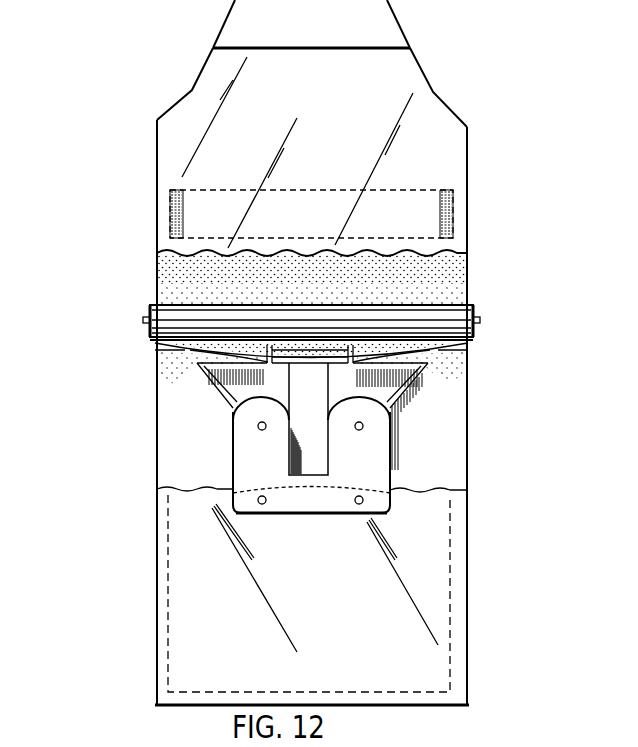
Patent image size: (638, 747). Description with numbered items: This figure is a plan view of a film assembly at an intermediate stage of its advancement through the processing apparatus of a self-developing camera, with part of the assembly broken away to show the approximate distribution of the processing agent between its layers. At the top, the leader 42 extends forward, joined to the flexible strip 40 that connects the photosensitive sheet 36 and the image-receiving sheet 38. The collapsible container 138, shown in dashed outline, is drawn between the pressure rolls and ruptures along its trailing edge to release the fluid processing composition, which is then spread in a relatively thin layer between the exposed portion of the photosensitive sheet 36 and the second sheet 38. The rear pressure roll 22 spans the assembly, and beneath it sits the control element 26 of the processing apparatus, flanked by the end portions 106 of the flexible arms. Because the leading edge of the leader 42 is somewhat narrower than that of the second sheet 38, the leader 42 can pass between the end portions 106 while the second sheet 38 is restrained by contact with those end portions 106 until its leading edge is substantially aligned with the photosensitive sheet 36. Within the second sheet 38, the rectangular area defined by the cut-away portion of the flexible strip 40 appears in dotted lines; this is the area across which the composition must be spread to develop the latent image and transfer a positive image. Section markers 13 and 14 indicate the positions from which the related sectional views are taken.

The leader 42 is at (385, 28).
The flexible strip 40 is at (403, 71).
The collapsible container 138 is at (413, 187).
The rear pressure roll 22 is at (473, 307).
The end portions 106 is at (172, 341).
The control element 26 is at (378, 454).
The photosensitive sheet 36 is at (181, 448).
The image-receiving sheet 38 is at (192, 583).
The section line 13- 13 is at (152, 353).
The section line 14- 14 is at (152, 376).